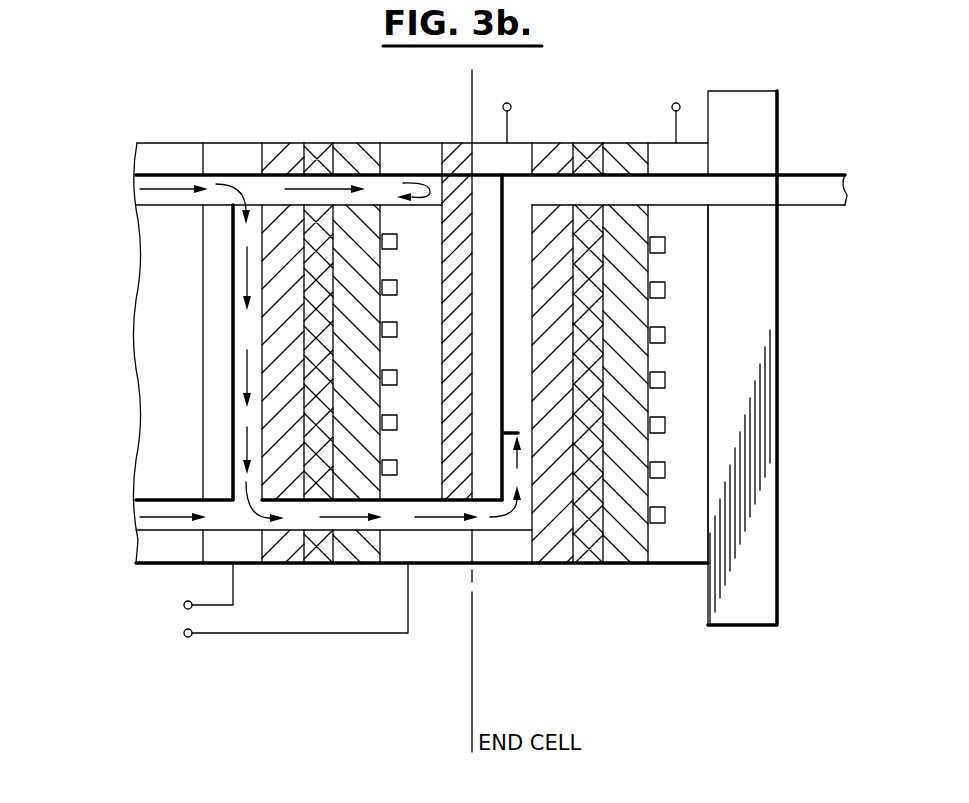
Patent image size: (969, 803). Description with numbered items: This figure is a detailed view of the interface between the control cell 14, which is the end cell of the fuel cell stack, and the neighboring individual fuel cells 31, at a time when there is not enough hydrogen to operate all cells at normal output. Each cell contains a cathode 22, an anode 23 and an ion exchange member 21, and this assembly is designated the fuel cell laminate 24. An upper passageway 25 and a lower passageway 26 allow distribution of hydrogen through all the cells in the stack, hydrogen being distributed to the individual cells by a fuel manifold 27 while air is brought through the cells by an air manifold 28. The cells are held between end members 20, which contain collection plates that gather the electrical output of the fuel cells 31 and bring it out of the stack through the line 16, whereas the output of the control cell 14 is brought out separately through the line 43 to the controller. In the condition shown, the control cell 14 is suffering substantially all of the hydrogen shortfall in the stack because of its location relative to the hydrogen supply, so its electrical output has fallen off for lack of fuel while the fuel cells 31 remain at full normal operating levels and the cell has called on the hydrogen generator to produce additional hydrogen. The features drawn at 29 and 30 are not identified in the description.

The control cell 14 is at (478, 663).
The line 16 is at (165, 590).
The end member 20 is at (762, 130).
The ion exchange member 21 is at (318, 150).
The cathode 22 is at (358, 152).
The anode 23 is at (277, 152).
The fuel cell laminate 24 is at (528, 602).
The upper passageway 25 is at (168, 170).
The lower passageway 26 is at (403, 520).
The fuel manifold 27 is at (515, 402).
The air manifold 28 is at (397, 242).
The current collector 29 is at (522, 428).
The cell frame 30 is at (228, 157).
The fuel cell 31 is at (160, 692).
The line 43 is at (488, 102).